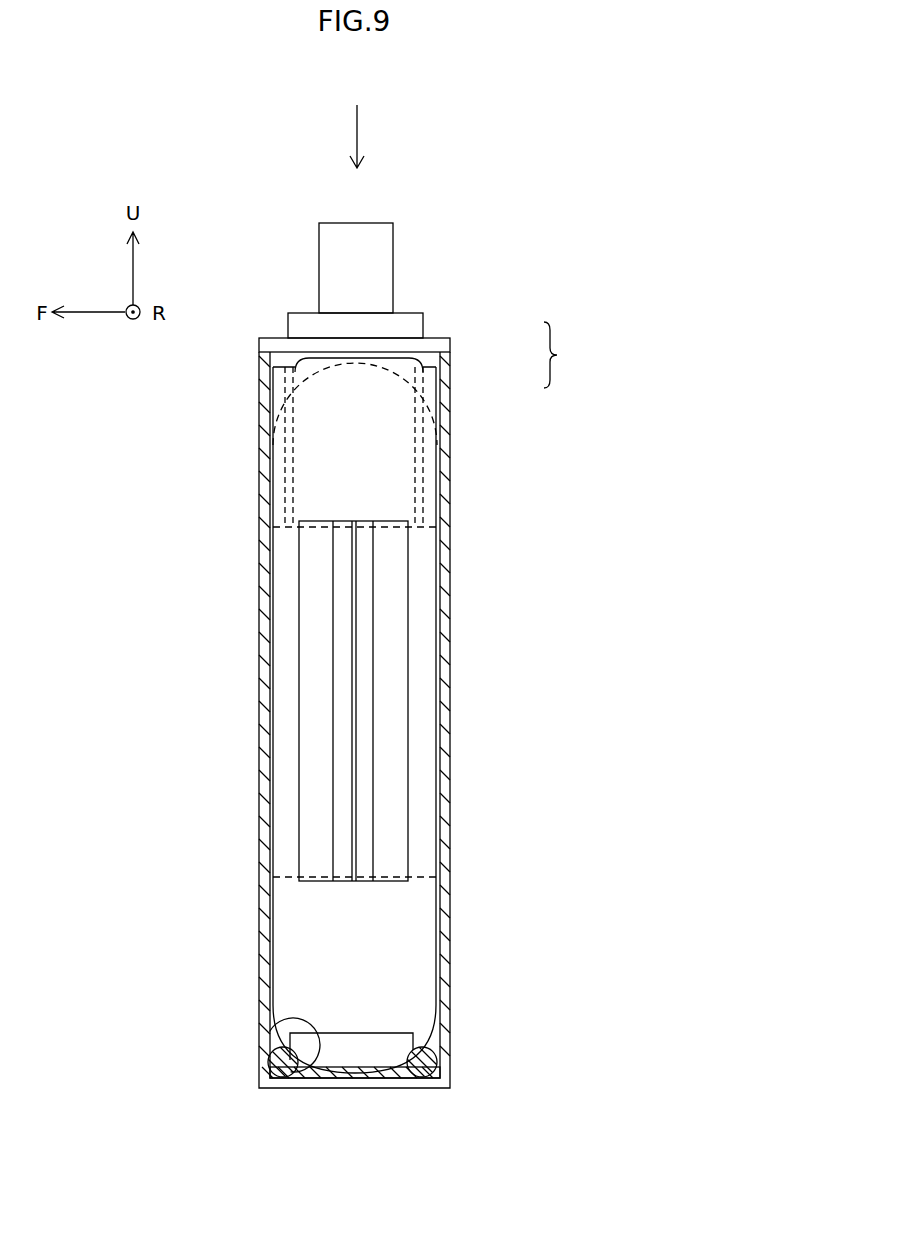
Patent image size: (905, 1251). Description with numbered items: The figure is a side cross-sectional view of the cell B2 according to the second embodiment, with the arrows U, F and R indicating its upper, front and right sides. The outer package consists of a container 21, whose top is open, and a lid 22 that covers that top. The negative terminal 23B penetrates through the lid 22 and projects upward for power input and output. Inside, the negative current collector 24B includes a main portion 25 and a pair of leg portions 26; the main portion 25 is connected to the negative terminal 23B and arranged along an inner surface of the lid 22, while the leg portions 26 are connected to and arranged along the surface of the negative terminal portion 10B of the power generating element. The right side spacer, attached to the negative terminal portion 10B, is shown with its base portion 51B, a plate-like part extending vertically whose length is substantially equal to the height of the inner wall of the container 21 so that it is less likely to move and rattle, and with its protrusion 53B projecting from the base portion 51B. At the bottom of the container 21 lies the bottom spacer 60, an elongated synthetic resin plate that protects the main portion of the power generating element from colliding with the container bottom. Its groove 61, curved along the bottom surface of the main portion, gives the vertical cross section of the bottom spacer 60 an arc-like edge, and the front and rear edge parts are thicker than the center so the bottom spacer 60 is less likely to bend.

The cell B2 is at (357, 122).
The negative terminal 23B is at (372, 232).
The lid 22 is at (276, 340).
The container 21 is at (443, 629).
The negative terminal portion 10B is at (393, 1043).
The main portion 25 is at (395, 355).
The leg portions 26 is at (437, 440).
The negative current collector 24B is at (576, 355).
The base portion 51B is at (395, 917).
The protrusion 53B is at (397, 730).
The groove 61 is at (296, 1050).
The bottom spacer 60 is at (291, 1066).